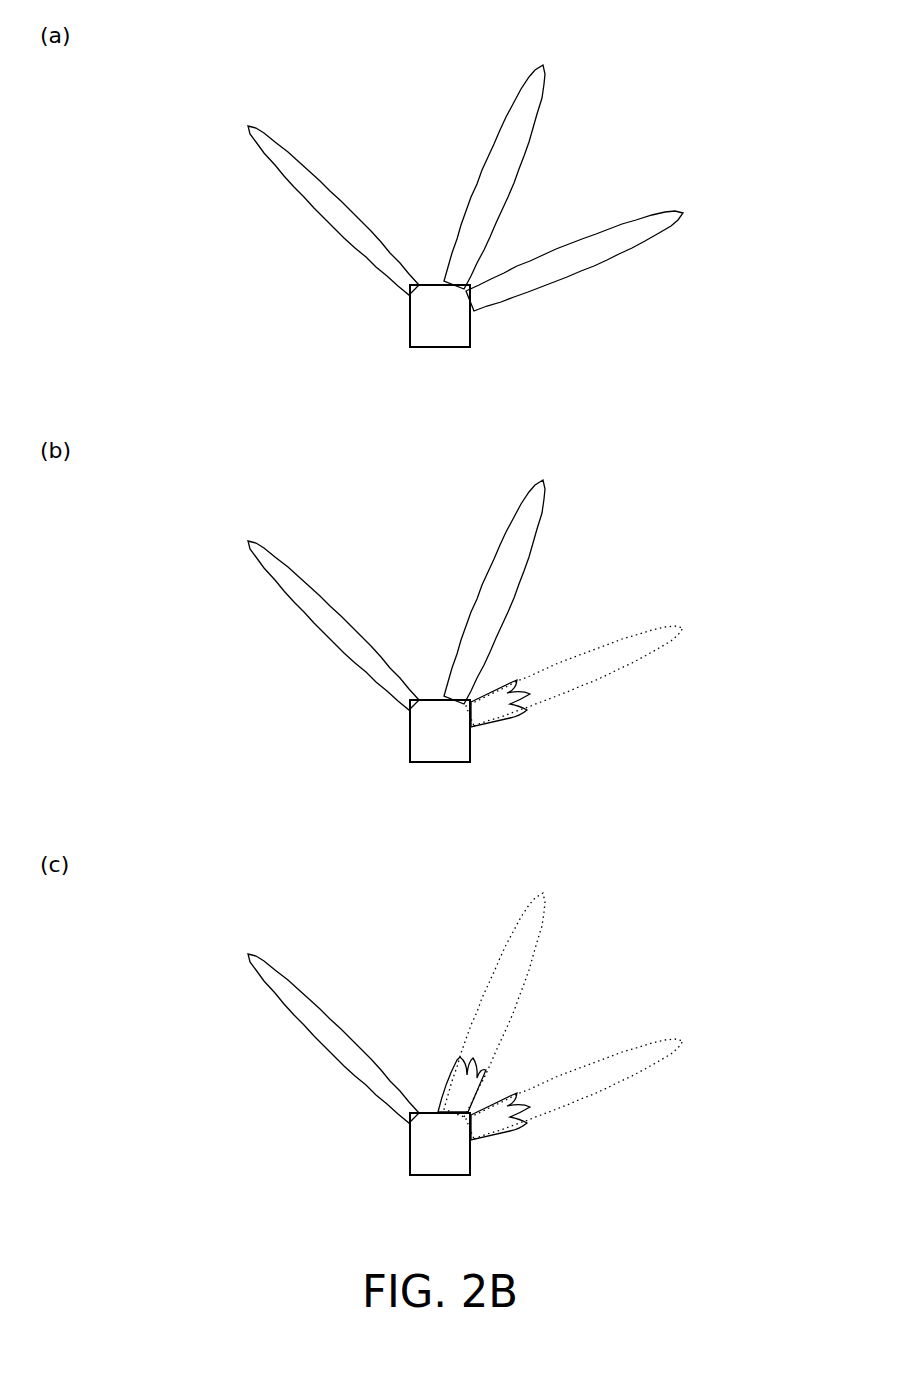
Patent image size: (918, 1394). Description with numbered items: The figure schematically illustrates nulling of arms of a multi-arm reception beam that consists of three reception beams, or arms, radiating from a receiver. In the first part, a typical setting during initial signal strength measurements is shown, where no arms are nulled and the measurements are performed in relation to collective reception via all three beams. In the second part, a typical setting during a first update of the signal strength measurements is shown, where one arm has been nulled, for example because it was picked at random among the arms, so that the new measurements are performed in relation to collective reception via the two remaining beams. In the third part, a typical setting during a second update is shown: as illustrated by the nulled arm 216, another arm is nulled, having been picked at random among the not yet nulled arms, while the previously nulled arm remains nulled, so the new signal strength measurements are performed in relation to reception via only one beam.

The nulled arm 216 is at (432, 1057).